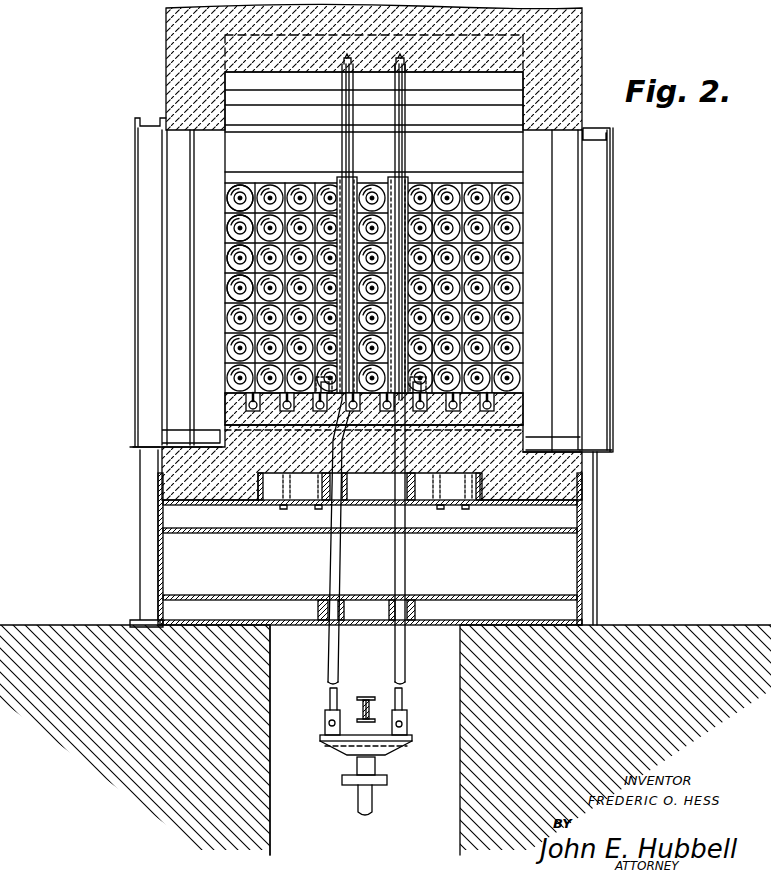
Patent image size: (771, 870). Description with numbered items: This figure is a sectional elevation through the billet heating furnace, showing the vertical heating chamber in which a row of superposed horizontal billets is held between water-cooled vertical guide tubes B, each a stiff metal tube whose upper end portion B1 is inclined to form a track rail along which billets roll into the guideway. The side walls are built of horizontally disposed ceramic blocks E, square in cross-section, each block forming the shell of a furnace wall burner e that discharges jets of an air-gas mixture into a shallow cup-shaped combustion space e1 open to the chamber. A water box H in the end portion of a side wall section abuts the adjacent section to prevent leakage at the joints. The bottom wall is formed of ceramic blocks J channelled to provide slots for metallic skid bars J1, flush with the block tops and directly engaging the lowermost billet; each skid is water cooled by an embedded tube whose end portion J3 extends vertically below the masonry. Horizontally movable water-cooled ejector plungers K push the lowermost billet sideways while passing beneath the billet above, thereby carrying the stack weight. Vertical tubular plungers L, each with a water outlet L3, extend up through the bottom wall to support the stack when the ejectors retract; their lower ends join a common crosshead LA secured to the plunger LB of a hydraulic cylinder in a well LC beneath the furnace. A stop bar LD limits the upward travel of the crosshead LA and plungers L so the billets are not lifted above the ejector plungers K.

The ceramic block E is at (259, 183).
The vertical guide tube B is at (342, 159).
The upper end portion of guide B1 is at (406, 86).
The furnace wall burner e is at (236, 222).
The combustion space e1 is at (236, 290).
The ejector plunger K is at (318, 390).
The metallic skid bar J1 is at (250, 395).
The ceramic bottom-wall block J is at (258, 414).
The cooling tube end portion J3 is at (318, 503).
The water box H is at (590, 190).
The vertical tubular plunger L is at (396, 563).
The water outlet L3 is at (330, 722).
The stop bar LD is at (378, 698).
The crosshead LA is at (345, 747).
The hydraulic cylinder plunger LB is at (368, 806).
The well LC is at (272, 820).